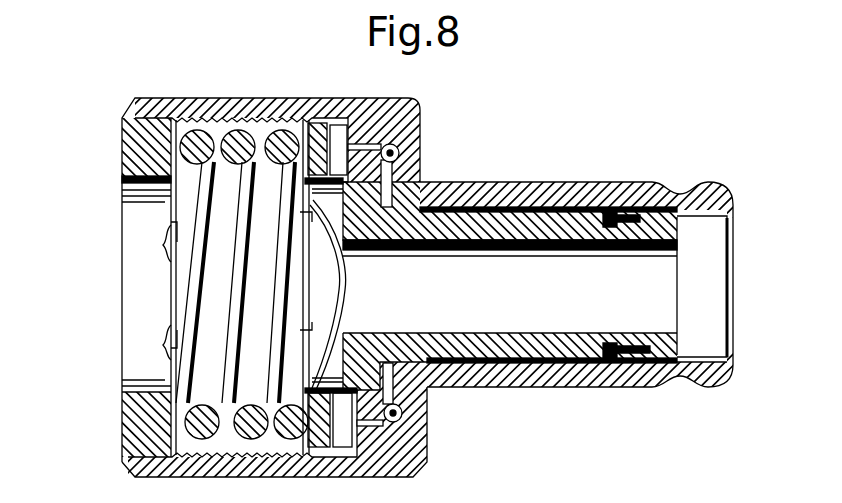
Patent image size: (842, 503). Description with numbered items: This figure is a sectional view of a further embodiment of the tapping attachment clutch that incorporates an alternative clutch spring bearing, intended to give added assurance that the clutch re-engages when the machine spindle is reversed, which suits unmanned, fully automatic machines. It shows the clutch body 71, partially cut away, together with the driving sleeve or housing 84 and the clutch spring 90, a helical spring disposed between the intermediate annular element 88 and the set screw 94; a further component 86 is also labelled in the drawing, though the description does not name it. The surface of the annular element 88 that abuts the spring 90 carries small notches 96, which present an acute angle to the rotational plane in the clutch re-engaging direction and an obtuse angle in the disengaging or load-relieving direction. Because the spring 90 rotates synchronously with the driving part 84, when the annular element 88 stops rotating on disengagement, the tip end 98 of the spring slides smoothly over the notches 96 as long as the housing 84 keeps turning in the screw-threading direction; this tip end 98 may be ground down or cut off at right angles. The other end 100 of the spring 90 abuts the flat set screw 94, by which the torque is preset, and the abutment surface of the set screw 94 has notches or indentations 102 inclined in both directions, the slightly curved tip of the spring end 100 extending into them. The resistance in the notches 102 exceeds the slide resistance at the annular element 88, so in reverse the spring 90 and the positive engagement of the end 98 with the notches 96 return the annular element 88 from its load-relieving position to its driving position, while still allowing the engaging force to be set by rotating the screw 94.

The clutch body 71 is at (495, 218).
The driving sleeve or housing 84 is at (173, 98).
The detent ball 86 is at (402, 148).
The intermediate annular element 88 is at (310, 98).
The clutch spring 90 is at (240, 98).
The set screw 94 is at (132, 153).
The notches 96 is at (342, 329).
The tip end of the spring 98 is at (314, 240).
The other end of the clutch spring 100 is at (167, 342).
The notches or indentations 102 is at (165, 235).